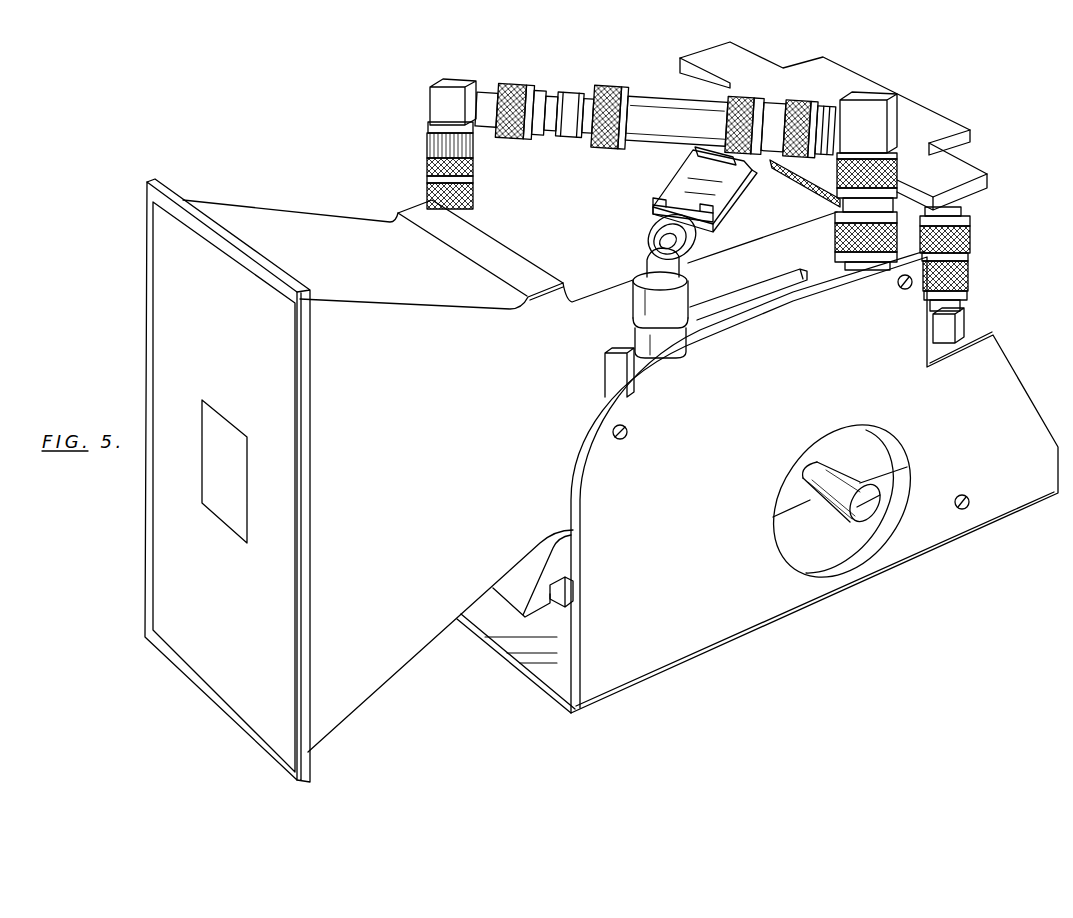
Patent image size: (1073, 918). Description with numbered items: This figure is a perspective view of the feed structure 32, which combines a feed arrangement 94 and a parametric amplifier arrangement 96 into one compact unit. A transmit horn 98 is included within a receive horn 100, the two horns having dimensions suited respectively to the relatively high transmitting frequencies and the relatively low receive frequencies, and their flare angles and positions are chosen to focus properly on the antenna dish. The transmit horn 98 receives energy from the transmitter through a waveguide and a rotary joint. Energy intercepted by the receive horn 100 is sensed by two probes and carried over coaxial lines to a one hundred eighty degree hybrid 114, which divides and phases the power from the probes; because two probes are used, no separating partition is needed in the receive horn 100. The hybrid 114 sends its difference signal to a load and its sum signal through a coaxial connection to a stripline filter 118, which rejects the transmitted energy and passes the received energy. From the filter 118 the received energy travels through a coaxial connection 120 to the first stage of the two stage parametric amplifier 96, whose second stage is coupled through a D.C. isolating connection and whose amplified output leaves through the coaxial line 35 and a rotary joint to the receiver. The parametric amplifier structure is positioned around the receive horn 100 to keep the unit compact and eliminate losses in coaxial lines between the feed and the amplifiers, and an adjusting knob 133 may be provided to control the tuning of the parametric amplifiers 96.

The receive horn 100 is at (322, 198).
The transmit horn 98 is at (233, 433).
The feed arrangement 94 is at (477, 380).
The coaxial line 35 is at (426, 184).
The stripline filter 118 is at (690, 186).
The coaxial connection 120 is at (648, 258).
The parametric amplifier arrangement 96 is at (742, 300).
The 180 degree hybrid 114 is at (932, 122).
The feed structure 32 is at (758, 683).
The adjusting knob 133 is at (862, 485).